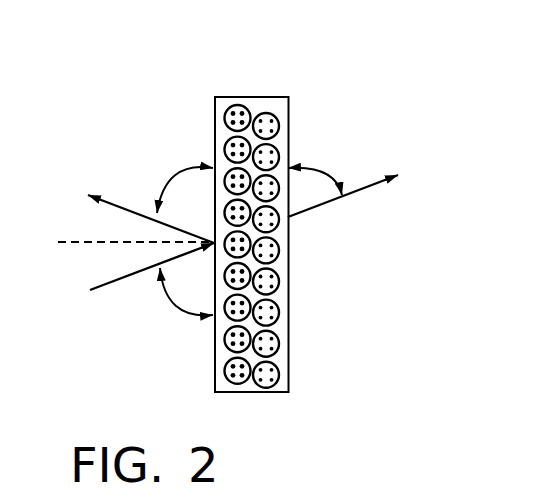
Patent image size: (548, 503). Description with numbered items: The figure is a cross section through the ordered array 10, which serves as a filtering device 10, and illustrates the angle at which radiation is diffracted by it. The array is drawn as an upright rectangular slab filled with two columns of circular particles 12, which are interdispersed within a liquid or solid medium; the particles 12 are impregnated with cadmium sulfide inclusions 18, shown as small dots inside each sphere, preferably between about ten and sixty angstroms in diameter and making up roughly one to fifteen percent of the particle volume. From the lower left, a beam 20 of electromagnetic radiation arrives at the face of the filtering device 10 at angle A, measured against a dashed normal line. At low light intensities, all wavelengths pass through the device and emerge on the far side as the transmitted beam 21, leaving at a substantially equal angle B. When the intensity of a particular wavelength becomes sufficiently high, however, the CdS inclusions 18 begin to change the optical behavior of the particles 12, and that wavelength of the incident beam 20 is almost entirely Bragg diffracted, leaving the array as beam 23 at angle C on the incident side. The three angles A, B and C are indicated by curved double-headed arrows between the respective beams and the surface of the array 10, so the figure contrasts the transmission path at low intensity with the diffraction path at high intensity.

The ordered array 10 is at (272, 82).
The particles 12 is at (227, 145).
The cadmium sulfide inclusions 18 is at (272, 152).
The beam of electromagnetic radiation 20 is at (123, 275).
The transmitted light beam 21 is at (313, 208).
The diffracted beam 23 is at (138, 207).
The angle of incidence A is at (172, 307).
The angle of transmission B is at (330, 172).
The angle of diffraction C is at (178, 178).